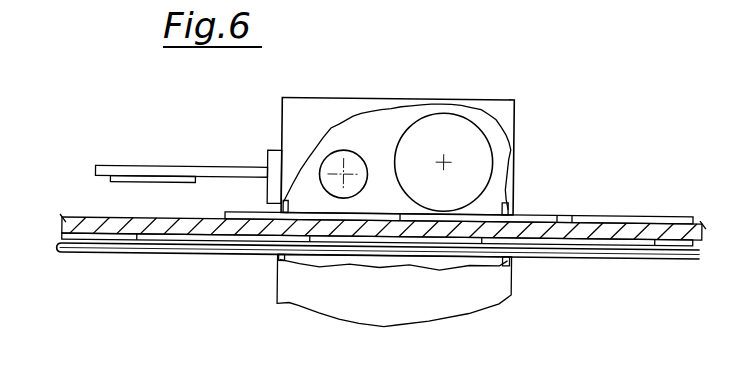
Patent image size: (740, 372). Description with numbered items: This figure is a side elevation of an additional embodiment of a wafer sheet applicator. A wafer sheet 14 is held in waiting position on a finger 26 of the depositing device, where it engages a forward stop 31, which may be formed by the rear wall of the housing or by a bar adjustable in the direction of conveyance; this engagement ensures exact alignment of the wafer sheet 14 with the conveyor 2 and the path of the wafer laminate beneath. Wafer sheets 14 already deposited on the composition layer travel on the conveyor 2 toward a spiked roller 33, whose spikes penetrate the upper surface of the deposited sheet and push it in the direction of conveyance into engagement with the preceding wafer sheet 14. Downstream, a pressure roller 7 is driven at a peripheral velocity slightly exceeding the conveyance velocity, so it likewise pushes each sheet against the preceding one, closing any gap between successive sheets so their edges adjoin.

The conveyor 2 is at (628, 250).
The pressure roller 7 is at (460, 133).
The wafer sheet 14 is at (230, 215).
The finger 26 is at (117, 182).
The forward stop 31 is at (266, 160).
The spiked roller 33 is at (350, 157).